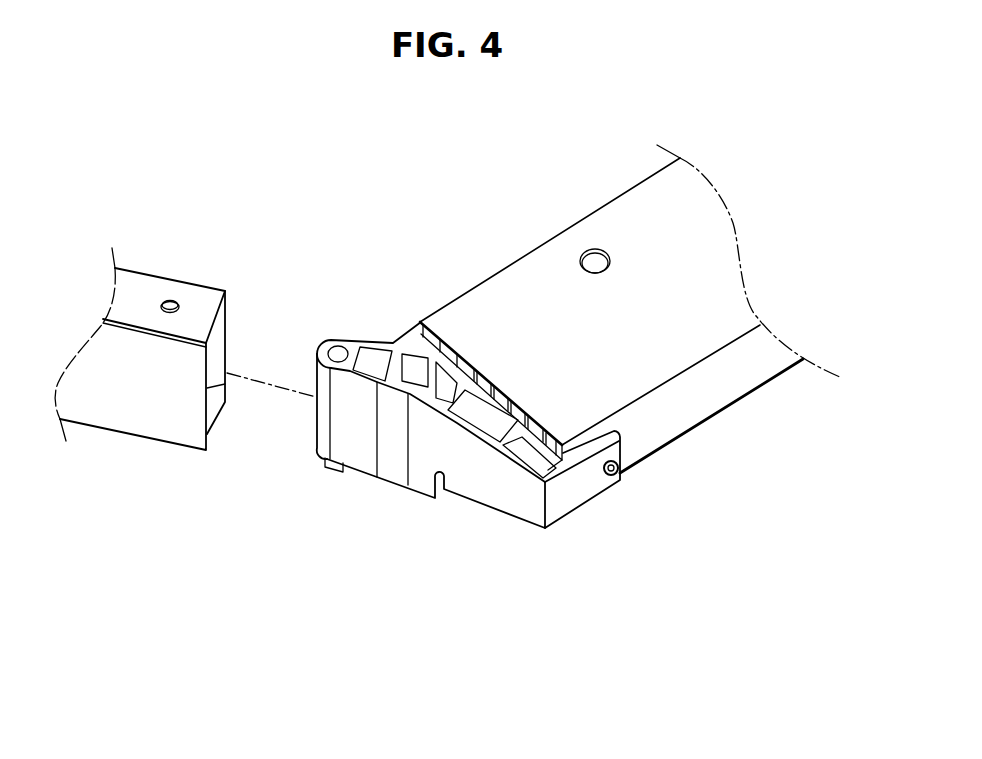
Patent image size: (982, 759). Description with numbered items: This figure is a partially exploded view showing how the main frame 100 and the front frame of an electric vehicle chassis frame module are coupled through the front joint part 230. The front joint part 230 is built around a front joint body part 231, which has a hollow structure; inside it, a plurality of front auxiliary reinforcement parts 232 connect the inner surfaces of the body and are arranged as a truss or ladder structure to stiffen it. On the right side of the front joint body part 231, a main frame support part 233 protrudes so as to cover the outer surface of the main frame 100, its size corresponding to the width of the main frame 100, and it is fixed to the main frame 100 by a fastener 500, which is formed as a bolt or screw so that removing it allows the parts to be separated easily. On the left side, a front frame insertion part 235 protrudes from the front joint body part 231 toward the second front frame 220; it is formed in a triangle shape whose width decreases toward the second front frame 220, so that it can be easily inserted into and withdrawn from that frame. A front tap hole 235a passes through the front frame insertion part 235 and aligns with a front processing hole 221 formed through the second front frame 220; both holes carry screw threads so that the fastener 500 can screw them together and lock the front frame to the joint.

The main frame 100 is at (540, 281).
The second front frame 220 is at (139, 407).
The front processing hole 221 is at (171, 300).
The front joint part 230 is at (472, 475).
The front joint body part 231 is at (483, 472).
The front auxiliary reinforcement parts 232 is at (516, 440).
The main frame support part 233 is at (578, 495).
The front frame insertion part 235 is at (355, 395).
The front tap hole 235a is at (331, 346).
The fastener 500 is at (622, 470).